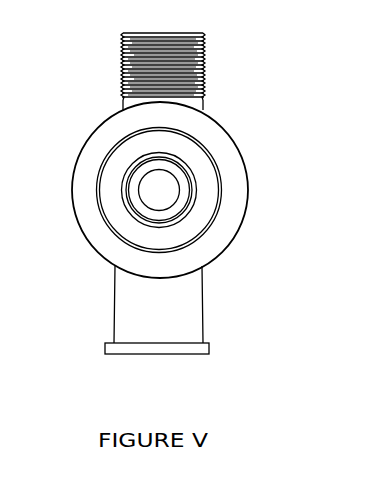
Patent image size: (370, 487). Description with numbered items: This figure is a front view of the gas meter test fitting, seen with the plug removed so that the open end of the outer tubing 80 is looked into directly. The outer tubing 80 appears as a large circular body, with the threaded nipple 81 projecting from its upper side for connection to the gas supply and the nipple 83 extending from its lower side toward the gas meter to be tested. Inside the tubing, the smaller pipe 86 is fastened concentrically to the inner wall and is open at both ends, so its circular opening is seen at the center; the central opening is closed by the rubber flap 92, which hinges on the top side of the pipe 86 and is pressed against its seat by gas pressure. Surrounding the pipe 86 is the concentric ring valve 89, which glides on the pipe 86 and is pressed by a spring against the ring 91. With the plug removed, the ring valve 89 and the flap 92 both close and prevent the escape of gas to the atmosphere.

The outer tubing 80 is at (233, 143).
The nipple 81 is at (204, 62).
The nipple 83 is at (203, 300).
The smaller pipe 86 is at (196, 218).
The concentric ring valve 89 is at (203, 233).
The ring 91 is at (218, 172).
The flap 92 is at (145, 195).